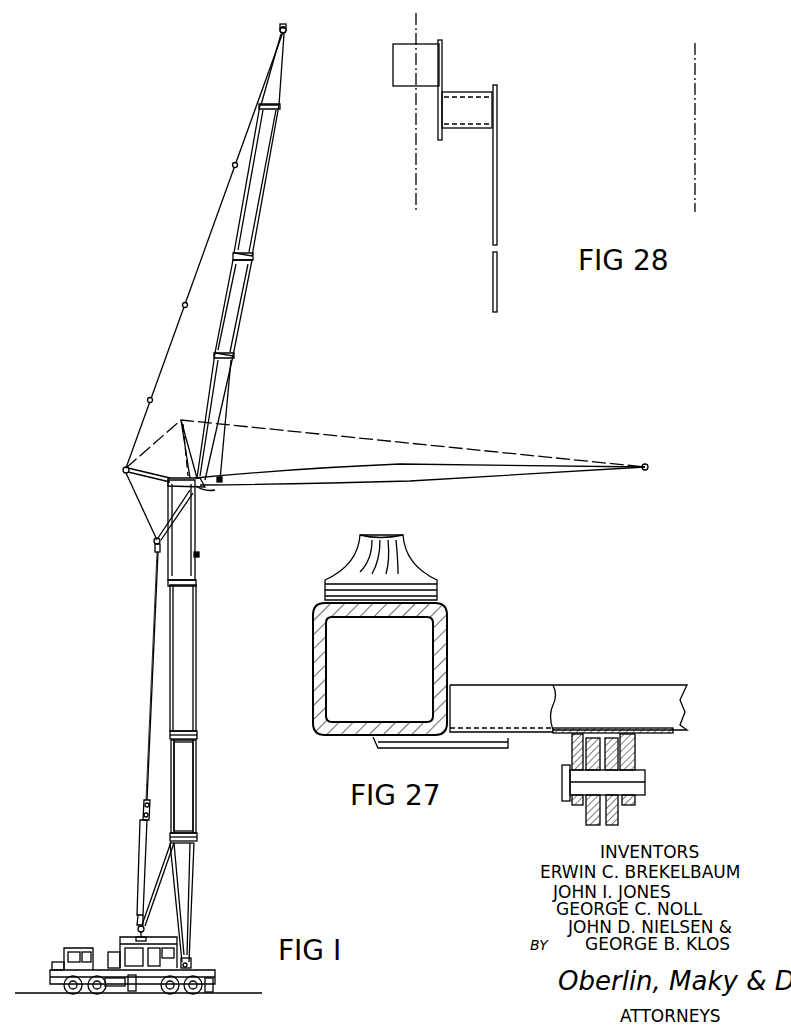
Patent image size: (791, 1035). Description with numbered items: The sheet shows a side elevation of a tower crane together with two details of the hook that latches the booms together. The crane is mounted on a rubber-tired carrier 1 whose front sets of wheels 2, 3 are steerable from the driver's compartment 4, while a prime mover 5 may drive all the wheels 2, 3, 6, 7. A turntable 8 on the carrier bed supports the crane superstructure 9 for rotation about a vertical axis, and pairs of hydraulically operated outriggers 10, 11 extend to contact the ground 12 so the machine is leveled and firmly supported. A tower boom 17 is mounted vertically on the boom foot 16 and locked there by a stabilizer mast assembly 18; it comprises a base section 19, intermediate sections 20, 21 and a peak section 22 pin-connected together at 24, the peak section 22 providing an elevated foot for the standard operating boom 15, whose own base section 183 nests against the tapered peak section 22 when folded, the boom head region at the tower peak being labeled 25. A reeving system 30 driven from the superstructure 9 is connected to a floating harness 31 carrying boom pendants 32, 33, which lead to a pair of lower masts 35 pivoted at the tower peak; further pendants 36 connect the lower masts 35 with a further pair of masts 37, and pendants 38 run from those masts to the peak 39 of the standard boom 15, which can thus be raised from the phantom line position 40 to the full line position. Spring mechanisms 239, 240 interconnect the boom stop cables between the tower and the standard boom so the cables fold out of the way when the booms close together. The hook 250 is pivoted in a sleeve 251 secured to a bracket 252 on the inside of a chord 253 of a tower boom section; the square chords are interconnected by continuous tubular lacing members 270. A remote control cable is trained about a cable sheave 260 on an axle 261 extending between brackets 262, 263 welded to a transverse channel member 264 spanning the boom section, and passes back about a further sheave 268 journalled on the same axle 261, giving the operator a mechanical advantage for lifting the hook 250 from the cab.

In FIG. 1, the rubber-tired carrier 1 is at (62, 939).
In FIG. 1, the front wheels 2 is at (74, 993).
In FIG. 1, the front wheels 3 is at (97, 993).
In FIG. 1, the driver's compartment 4 is at (85, 948).
In FIG. 1, the prime mover 5 is at (52, 961).
In FIG. 1, the wheels 6 is at (171, 993).
In FIG. 1, the wheels 7 is at (196, 992).
In FIG. 1, the turntable 8 is at (156, 988).
In FIG. 1, the crane superstructure 9 is at (124, 935).
In FIG. 1, the outriggers 10 is at (132, 991).
In FIG. 1, the outriggers 11 is at (220, 977).
In FIG. 1, the ground 12 is at (32, 996).
In FIG. 1, the standard operating boom 15 is at (254, 232).
In FIG. 1, the boom foot 16 is at (189, 962).
In FIG. 1, the tower boom 17 is at (196, 767).
In FIG. 1, the stabilizer mast assembly 18 is at (154, 870).
In FIG. 1, the base section 19 is at (192, 882).
In FIG. 1, the intermediate section 20 is at (198, 805).
In FIG. 1, the intermediate section 21 is at (196, 677).
In FIG. 1, the peak section 22 is at (196, 520).
In FIG. 1, the pin connections 24 is at (197, 734).
In FIG. 1, the boom head 25 is at (208, 484).
In FIG. 1, the reeving system 30 is at (138, 826).
In FIG. 1, the floating harness 31 is at (144, 799).
In FIG. 1, the boom pendant 32 is at (148, 664).
In FIG. 1, the boom pendant 33 is at (152, 676).
In FIG. 1, the lower masts 35 is at (154, 536).
In FIG. 1, the pendants 36 is at (135, 492).
In FIG. 1, the masts 37 is at (126, 474).
In FIG. 1, the pendants 38 is at (172, 340).
In FIG. 1, the peak of the standard operating boom 39 is at (286, 32).
In FIG. 1, the phantom line position 40 is at (600, 462).
In FIG. 1, the base section of the standard boom 183 is at (212, 380).
In FIG. 1, the spring mechanism 239 is at (199, 555).
In FIG. 1, the spring mechanism 240 is at (232, 384).
In FIG. 28, the hook 250 is at (516, 176).
In FIG. 28, the sleeve 251 is at (464, 130).
In FIG. 28, the bracket 252 is at (444, 72).
In FIG. 28, the chord 253 is at (430, 42).
In FIG. 27, the chord 253 is at (448, 624).
In FIG. 27, the cable sheave 260 is at (588, 814).
In FIG. 27, the axle 261 is at (644, 784).
In FIG. 27, the bracket 262 is at (571, 754).
In FIG. 27, the bracket 263 is at (634, 756).
In FIG. 27, the transverse channel member 264 is at (684, 708).
In FIG. 27, the sheave 268 is at (620, 814).
In FIG. 27, the tubular lacing member 270 is at (414, 566).